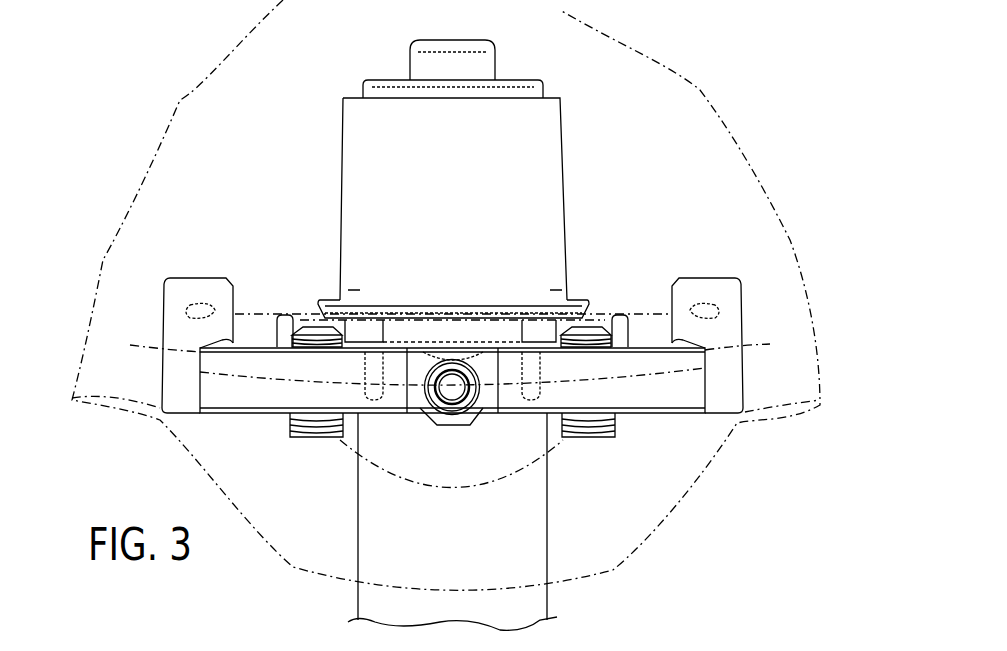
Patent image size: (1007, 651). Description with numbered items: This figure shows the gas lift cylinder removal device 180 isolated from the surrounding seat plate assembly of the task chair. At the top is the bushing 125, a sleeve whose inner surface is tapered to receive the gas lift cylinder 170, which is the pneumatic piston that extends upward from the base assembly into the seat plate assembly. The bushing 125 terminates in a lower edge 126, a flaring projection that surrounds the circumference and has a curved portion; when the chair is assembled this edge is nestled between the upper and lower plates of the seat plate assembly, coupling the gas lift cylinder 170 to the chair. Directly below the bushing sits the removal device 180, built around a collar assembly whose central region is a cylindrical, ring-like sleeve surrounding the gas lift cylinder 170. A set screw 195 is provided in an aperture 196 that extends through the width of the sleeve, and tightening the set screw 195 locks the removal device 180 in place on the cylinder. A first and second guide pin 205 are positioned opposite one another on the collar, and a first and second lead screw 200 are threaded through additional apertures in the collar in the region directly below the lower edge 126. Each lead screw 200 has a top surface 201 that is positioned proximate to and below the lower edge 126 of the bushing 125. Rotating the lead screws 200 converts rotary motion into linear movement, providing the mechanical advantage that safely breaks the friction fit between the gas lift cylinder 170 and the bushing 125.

The bushing 125 is at (358, 145).
The lower edge 126 is at (582, 312).
The gas lift cylinder 170 is at (535, 605).
The gas lift cylinder removal device 180 is at (620, 133).
The set screw 195 is at (440, 415).
The aperture 196 is at (465, 415).
The lead screw 200 is at (290, 436).
The top surface 201 is at (310, 327).
The guide pin 205 is at (175, 303).